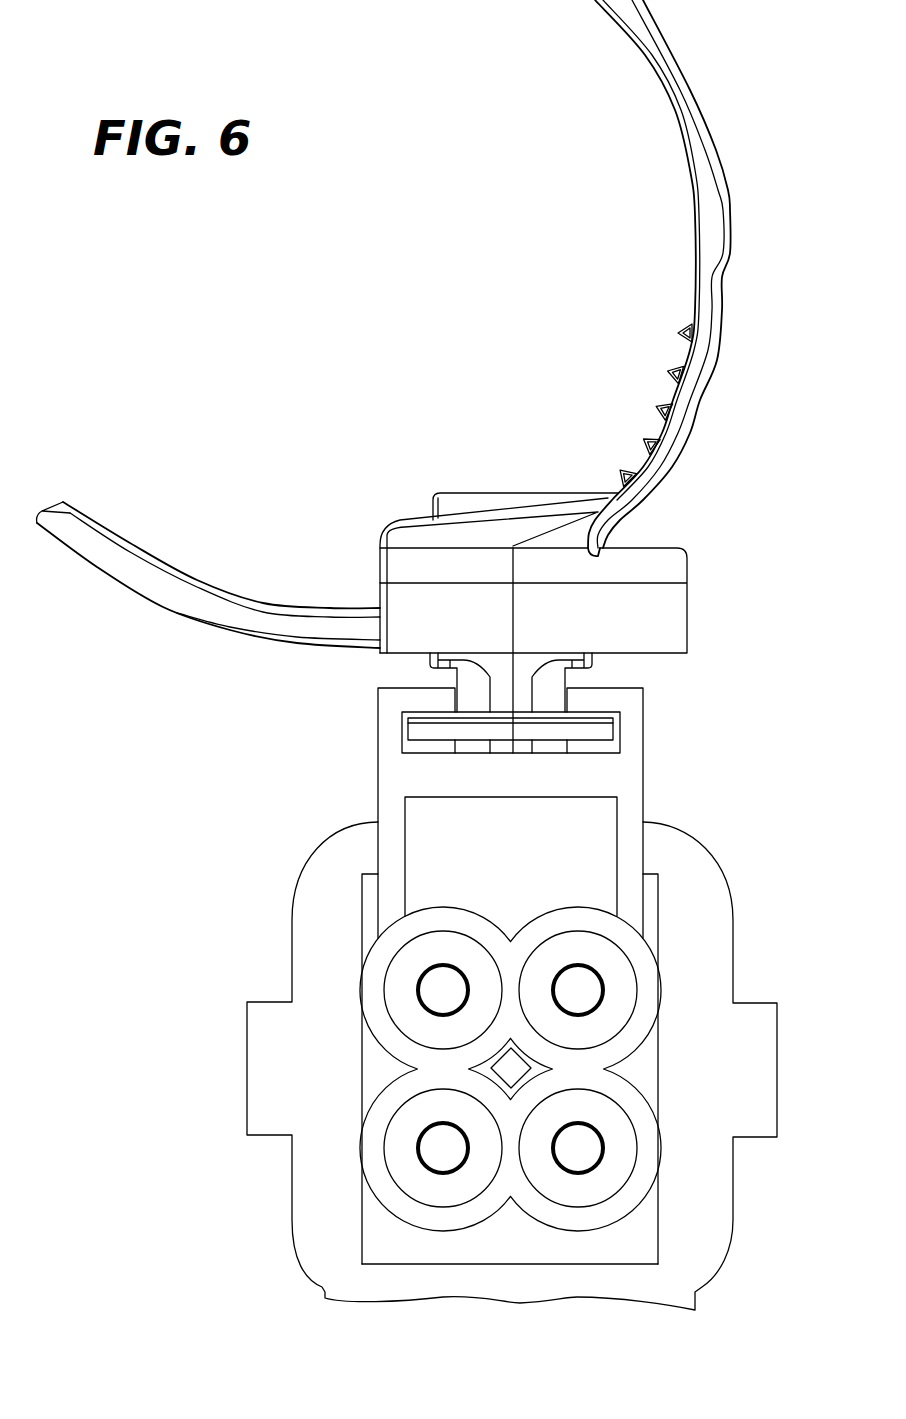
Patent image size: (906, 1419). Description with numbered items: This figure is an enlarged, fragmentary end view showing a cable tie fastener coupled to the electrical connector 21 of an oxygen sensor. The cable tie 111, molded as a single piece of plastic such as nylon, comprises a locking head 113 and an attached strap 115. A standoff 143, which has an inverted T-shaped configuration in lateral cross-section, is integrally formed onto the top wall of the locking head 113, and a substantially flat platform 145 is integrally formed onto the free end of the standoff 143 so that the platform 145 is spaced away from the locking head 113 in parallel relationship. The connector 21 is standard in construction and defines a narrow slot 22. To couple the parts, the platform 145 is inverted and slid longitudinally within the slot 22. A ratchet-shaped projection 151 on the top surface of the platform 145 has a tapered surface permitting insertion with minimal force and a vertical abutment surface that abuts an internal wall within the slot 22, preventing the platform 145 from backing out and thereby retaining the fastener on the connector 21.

The cable tie 111 is at (702, 208).
The locking head 113 is at (665, 603).
The strap 115 is at (178, 613).
The standoff 143 is at (553, 688).
The platform 145 is at (600, 727).
The slot 22 is at (603, 747).
The ratchet-shaped projection 151 is at (503, 750).
The electrical connector 21 is at (707, 965).